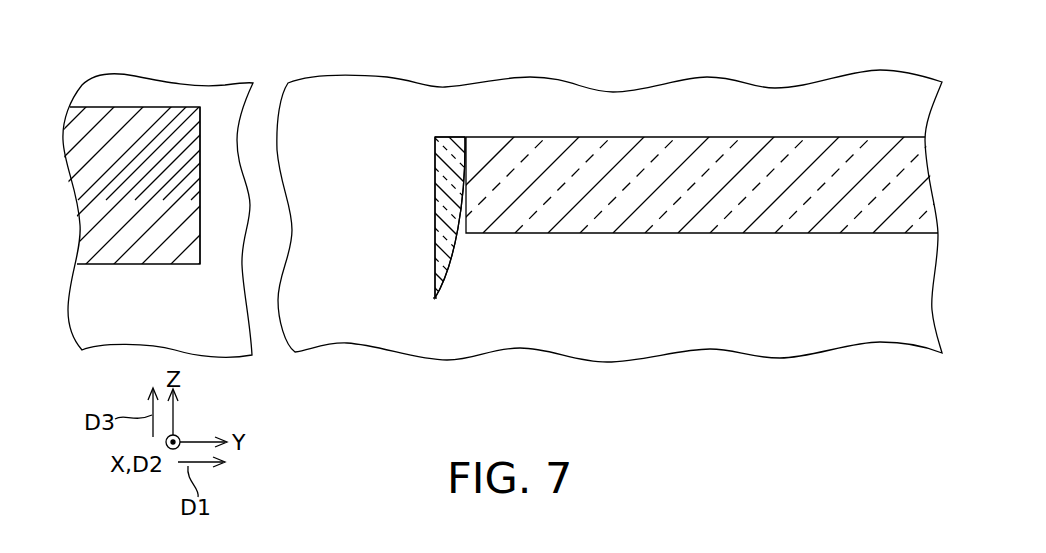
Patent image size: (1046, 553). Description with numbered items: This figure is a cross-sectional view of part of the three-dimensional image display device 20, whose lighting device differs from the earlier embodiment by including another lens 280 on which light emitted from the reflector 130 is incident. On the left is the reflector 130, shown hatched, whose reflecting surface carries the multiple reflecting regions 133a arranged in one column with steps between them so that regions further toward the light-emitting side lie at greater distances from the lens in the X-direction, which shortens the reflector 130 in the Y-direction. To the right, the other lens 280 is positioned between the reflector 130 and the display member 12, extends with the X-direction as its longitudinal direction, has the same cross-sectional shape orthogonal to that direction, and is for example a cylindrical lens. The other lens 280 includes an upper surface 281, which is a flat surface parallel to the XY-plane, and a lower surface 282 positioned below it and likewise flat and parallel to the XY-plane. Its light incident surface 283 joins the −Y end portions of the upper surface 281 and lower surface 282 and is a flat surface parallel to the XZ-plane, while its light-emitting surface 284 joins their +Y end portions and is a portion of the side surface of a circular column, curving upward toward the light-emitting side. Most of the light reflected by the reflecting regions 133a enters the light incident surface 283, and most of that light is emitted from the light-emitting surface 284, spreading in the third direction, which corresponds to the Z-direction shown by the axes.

The display member 12 is at (892, 162).
The three-dimensional image display device 20 is at (156, 32).
The reflector 130 is at (118, 253).
The reflecting regions 133a is at (201, 145).
The other lens 280 is at (447, 148).
The upper surface 281 is at (435, 138).
The lower surface 282 is at (435, 298).
The light incident surface 283 is at (435, 243).
The light-emitting surface 284 is at (453, 257).